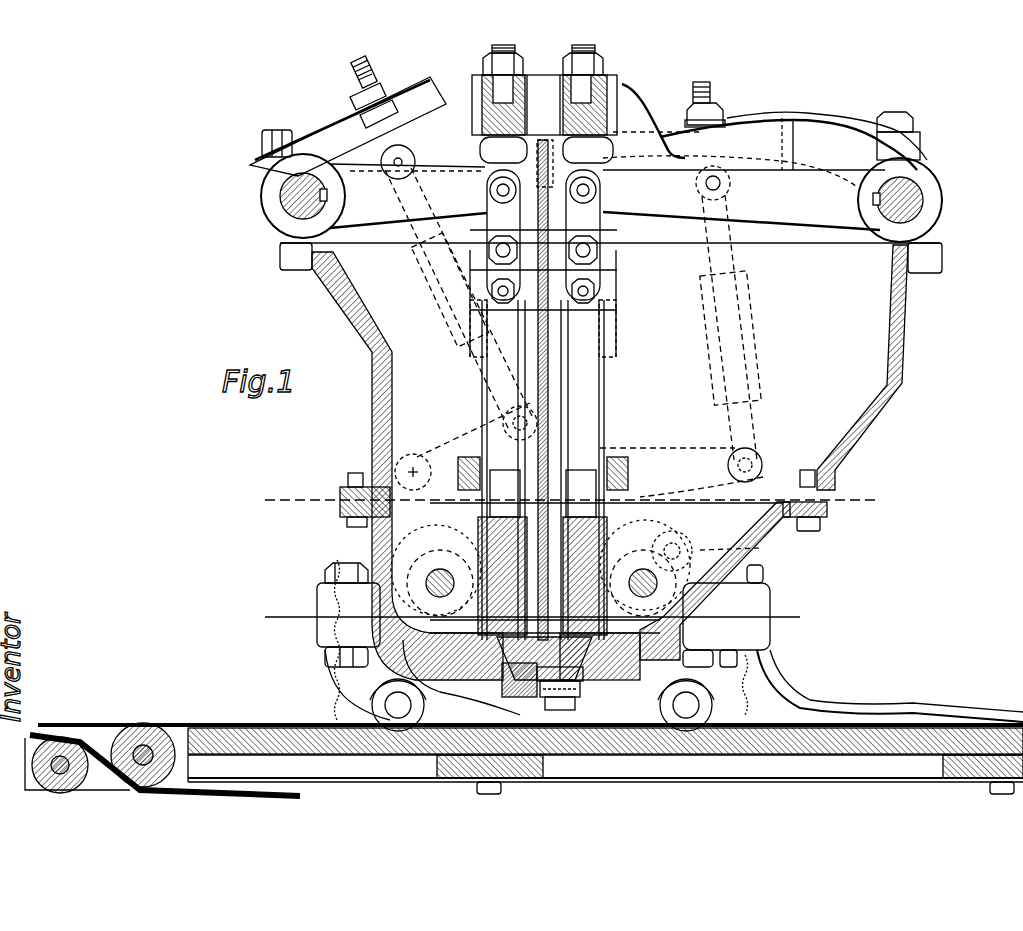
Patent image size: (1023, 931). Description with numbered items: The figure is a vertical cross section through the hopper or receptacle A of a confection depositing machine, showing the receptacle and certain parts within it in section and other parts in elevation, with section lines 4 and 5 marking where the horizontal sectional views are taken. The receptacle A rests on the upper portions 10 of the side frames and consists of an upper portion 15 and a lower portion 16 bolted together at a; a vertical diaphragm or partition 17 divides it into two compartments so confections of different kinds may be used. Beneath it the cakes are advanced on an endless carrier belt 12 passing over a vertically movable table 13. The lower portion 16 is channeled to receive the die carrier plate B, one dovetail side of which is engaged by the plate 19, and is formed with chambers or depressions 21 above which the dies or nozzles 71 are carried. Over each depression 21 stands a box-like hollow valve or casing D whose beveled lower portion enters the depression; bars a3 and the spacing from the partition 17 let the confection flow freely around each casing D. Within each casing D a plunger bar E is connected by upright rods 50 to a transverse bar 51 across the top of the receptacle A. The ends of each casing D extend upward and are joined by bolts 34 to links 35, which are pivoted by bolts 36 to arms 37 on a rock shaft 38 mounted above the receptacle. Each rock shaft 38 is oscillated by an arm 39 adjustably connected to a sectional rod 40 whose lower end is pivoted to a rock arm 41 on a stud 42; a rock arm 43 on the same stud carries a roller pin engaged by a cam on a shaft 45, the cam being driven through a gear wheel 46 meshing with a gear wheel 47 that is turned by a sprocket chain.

The section line 4- 4 is at (275, 482).
The section line 5- 5 is at (288, 598).
The upper portions of the side frames 10 is at (790, 680).
The endless carrier belt 12 is at (1000, 740).
The vertically movable table 13 is at (955, 740).
The upper portion of the receptacle 15 is at (790, 426).
The lower portion of the receptacle 16 is at (663, 599).
The vertical diaphragm or partition 17 is at (548, 412).
The plate 19 is at (662, 547).
The chambers or depressions 21 is at (545, 617).
The bolts 34 is at (515, 250).
The links 35 is at (543, 254).
The bolts 36 is at (497, 192).
The arms 37 is at (628, 157).
The rock shaft 38 is at (290, 205).
The arm 39 is at (428, 100).
The sectional rod 40 is at (352, 92).
The rock arm 41 is at (470, 415).
The stud or shaft 42 is at (413, 454).
The rock arm 43 is at (577, 532).
The shaft 45 is at (425, 588).
The gear wheel 46 is at (375, 572).
The gear wheel 47 is at (335, 688).
The upright rods 50 is at (615, 420).
The transverse bar 51 is at (485, 92).
The die or nozzle 71 is at (538, 695).
The hopper or receptacle A is at (905, 357).
The die carrier plate B is at (505, 680).
The hollow valve or casing D is at (543, 487).
The plunger bar E is at (542, 552).
The bolts a is at (352, 525).
The bars a3 is at (478, 447).